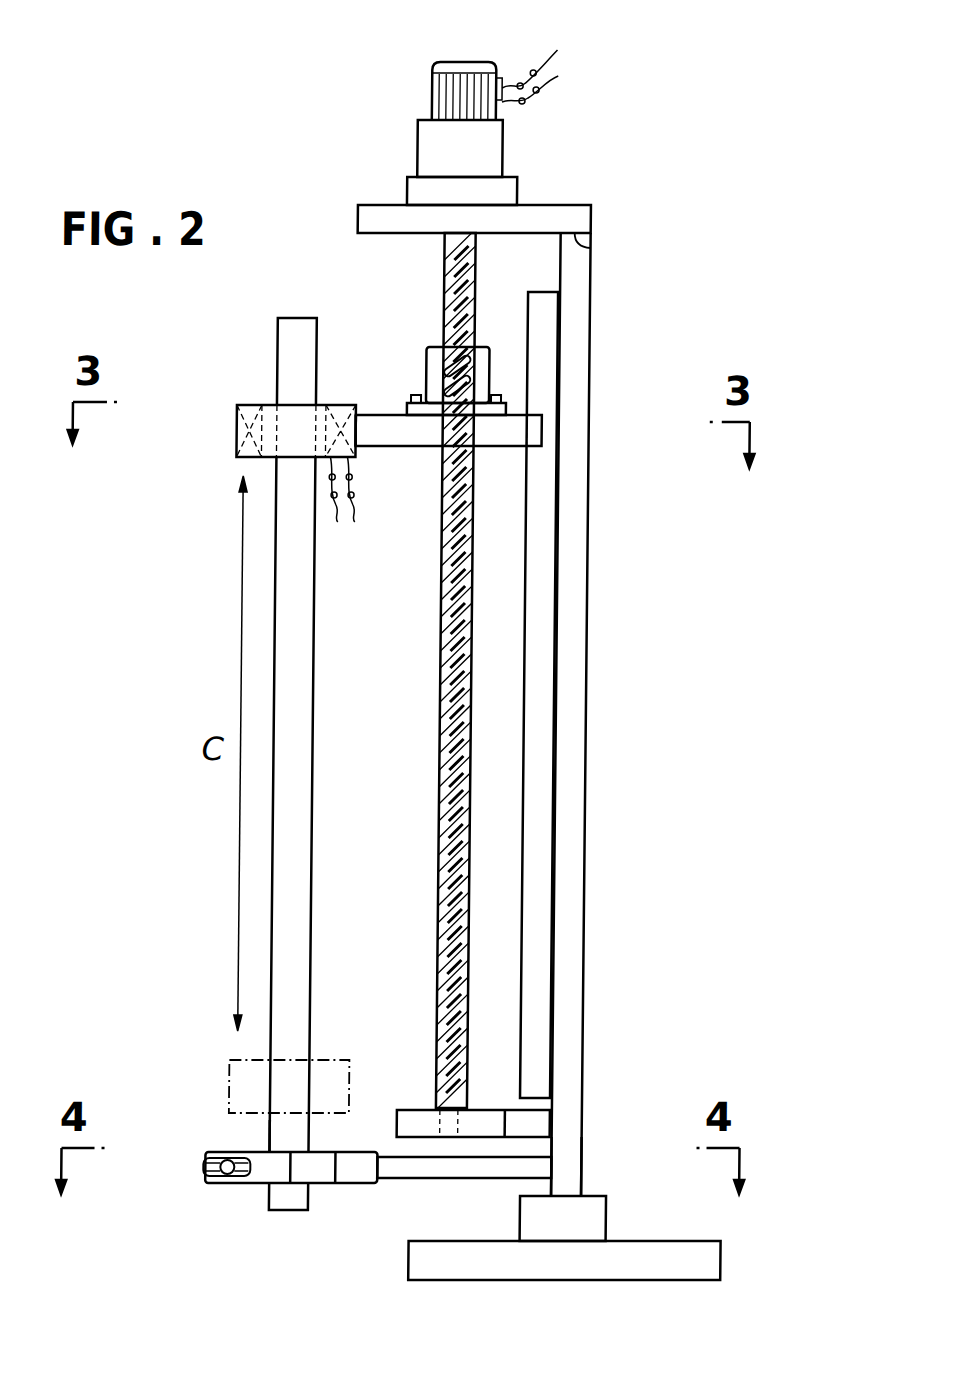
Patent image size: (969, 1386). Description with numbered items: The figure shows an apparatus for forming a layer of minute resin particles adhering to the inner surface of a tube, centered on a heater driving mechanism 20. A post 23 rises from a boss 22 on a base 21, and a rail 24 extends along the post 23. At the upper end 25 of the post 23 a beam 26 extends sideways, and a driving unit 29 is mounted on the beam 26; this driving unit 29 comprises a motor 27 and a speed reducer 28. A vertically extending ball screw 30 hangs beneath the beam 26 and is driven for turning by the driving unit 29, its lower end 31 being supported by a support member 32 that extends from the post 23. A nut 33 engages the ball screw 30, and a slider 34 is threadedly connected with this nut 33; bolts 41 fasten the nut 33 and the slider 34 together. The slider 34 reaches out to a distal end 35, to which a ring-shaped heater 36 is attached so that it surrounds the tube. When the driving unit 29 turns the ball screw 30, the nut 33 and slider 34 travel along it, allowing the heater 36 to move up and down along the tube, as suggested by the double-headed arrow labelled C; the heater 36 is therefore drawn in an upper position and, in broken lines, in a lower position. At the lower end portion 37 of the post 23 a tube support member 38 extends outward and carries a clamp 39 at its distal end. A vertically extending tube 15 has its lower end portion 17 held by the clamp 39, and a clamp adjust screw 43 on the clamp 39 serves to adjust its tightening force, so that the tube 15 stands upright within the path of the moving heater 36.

The tube 15 is at (294, 700).
The lower end portion 17 is at (278, 1132).
The heater driving mechanism 20 is at (322, 243).
The base 21 is at (715, 1262).
The boss 22 is at (599, 1226).
The post 23 is at (573, 690).
The rail 24 is at (544, 632).
The upper end 25 is at (592, 248).
The beam 26 is at (563, 222).
The motor 27 is at (480, 101).
The speed reducer 28 is at (487, 150).
The driving unit 29 is at (614, 118).
The ball screw 30 is at (476, 540).
The lower end 31 is at (467, 1131).
The support member 32 is at (487, 1130).
The nut 33 is at (484, 363).
The slider 34 is at (497, 455).
The distal end 35 is at (362, 418).
The ring-shaped heater 36 is at (238, 430).
The lower end portion 37 is at (572, 1160).
The tube support member 38 is at (415, 1166).
The clamp 39 is at (331, 1177).
The bolts 41 is at (416, 394).
The clamp adjust screw 43 is at (211, 1168).